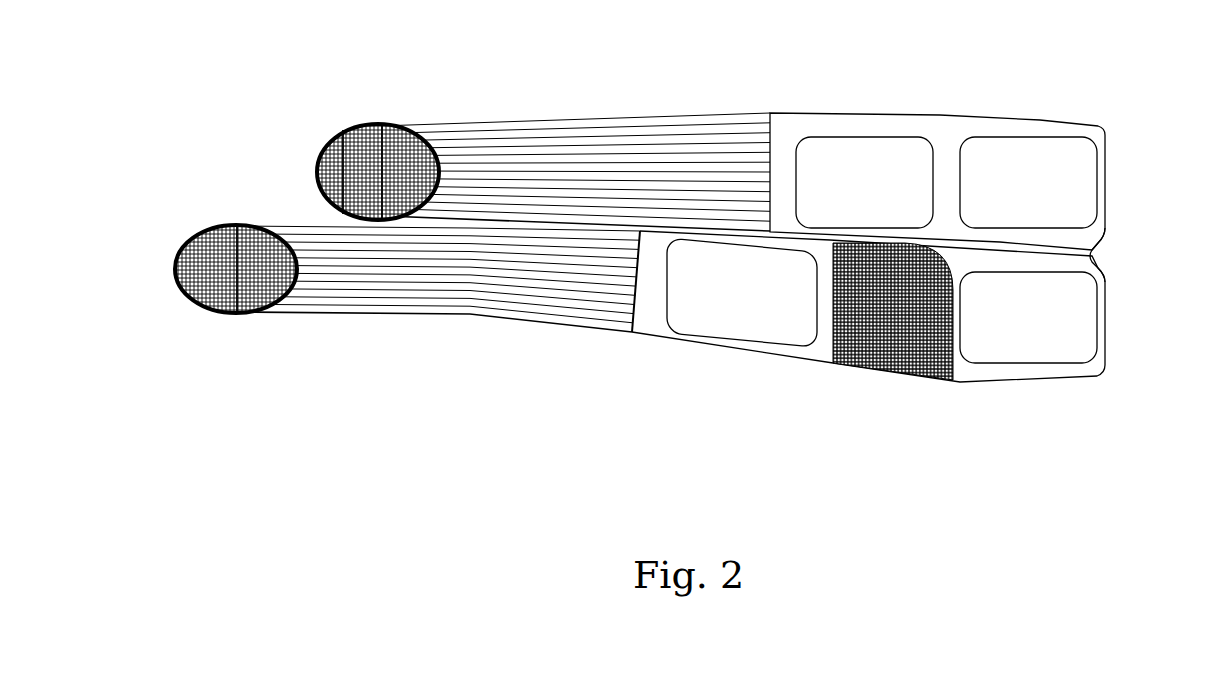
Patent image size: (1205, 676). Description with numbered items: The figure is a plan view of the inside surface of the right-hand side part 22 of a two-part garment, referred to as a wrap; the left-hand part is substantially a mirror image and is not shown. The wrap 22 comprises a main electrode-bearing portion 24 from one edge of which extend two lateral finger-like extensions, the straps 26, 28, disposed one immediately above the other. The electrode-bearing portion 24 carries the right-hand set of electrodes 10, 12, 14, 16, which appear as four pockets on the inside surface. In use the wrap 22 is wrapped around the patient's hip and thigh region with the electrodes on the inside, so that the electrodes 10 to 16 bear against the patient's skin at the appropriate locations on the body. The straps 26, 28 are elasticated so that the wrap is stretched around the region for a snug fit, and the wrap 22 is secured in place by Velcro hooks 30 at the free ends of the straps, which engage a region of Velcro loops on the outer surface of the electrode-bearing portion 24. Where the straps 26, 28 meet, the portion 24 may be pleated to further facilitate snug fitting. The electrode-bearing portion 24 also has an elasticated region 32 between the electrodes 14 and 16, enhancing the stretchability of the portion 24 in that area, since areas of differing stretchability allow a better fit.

The electrode 10 is at (1033, 167).
The electrode 12 is at (868, 160).
The electrode 14 is at (747, 302).
The electrode 16 is at (1037, 327).
The right-hand side part (wrap) 22 is at (940, 115).
The main electrode-bearing portion 24 is at (1058, 250).
The strap (lateral finger-like extension) 26 is at (645, 136).
The strap (lateral finger-like extension) 28 is at (537, 293).
The Velcro hooks 30 is at (230, 228).
The elasticated region 32 is at (893, 347).